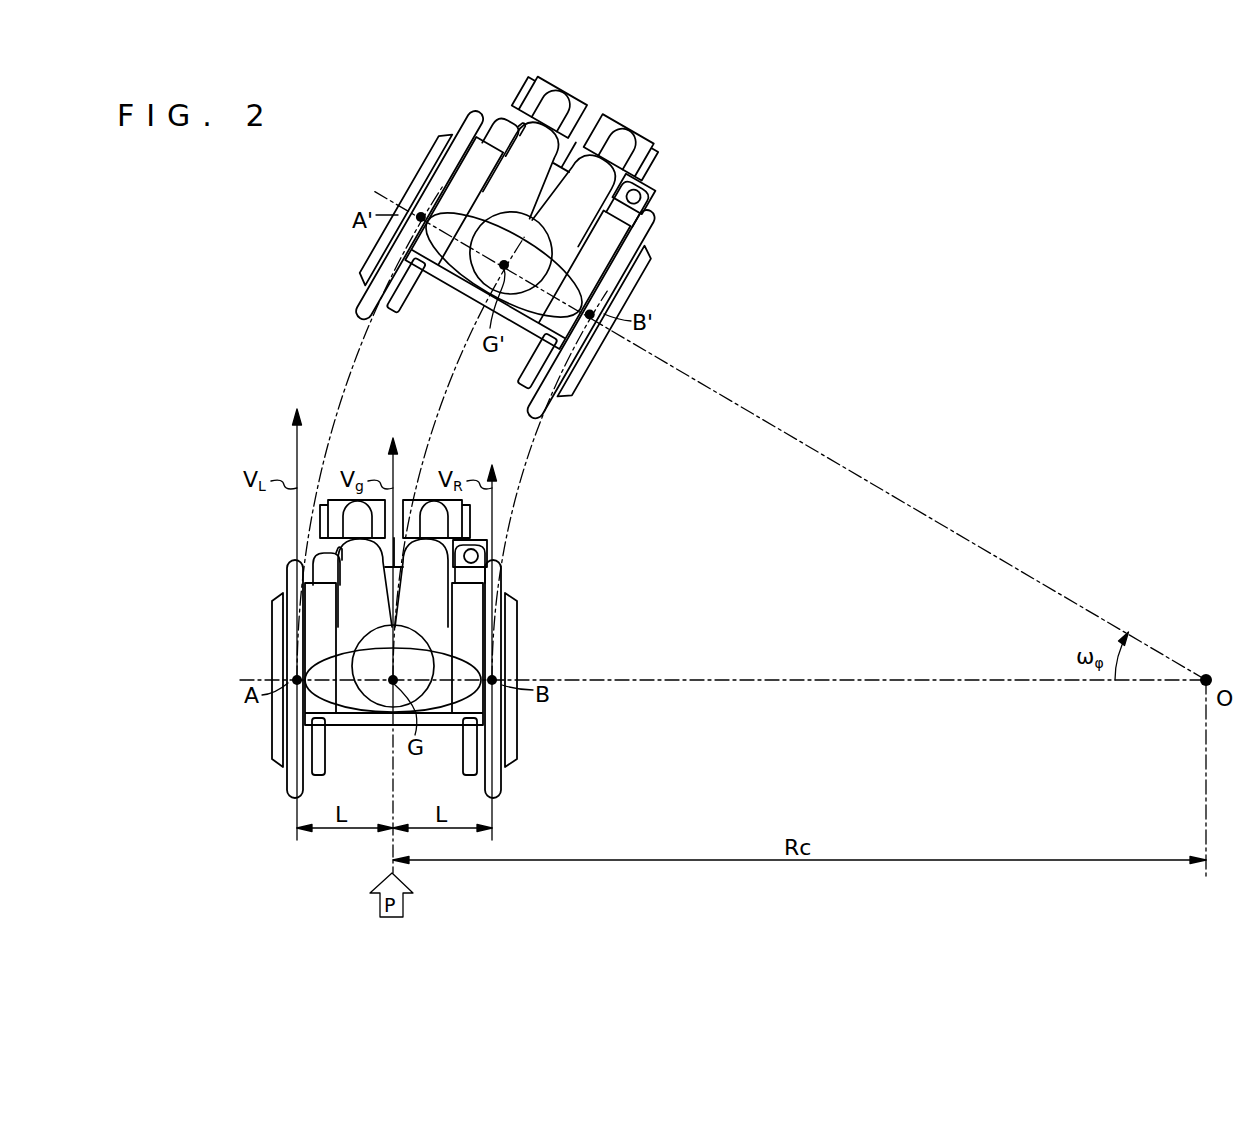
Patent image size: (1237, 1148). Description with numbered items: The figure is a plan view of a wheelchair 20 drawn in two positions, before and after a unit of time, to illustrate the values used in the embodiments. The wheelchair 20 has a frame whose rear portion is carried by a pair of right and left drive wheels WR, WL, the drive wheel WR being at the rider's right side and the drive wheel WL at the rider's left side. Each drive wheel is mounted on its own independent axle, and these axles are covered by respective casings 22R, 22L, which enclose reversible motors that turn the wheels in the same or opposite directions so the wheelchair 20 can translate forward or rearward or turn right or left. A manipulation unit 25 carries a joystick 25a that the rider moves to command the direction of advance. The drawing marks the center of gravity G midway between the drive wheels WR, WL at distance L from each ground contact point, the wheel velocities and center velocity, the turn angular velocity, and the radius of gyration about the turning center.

The wheelchair 20 is at (265, 799).
The casing 22L is at (282, 636).
The casing 22R is at (508, 636).
The left drive wheel WL is at (286, 572).
The right drive wheel WR is at (503, 578).
The manipulation unit 25 is at (488, 544).
The joystick 25a is at (490, 553).